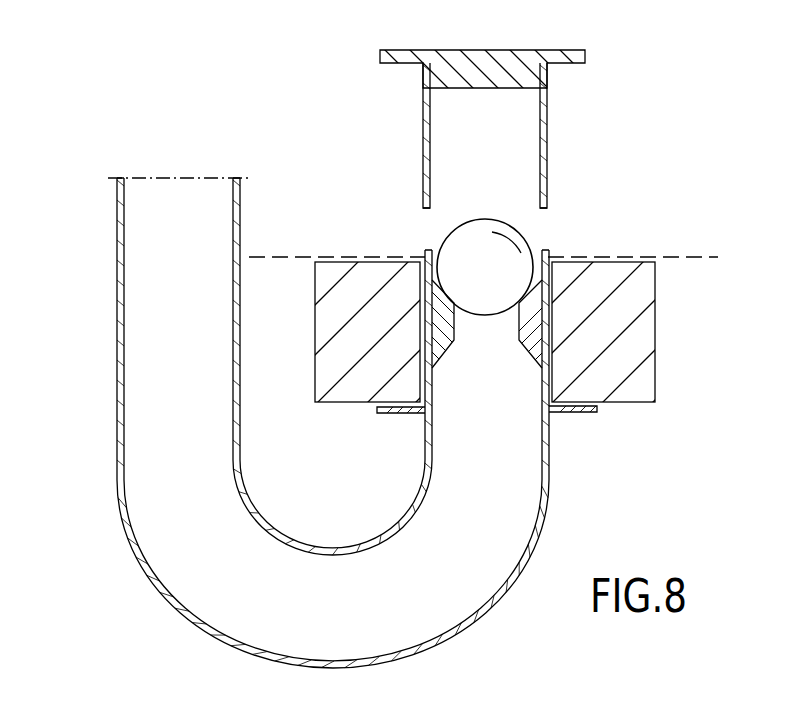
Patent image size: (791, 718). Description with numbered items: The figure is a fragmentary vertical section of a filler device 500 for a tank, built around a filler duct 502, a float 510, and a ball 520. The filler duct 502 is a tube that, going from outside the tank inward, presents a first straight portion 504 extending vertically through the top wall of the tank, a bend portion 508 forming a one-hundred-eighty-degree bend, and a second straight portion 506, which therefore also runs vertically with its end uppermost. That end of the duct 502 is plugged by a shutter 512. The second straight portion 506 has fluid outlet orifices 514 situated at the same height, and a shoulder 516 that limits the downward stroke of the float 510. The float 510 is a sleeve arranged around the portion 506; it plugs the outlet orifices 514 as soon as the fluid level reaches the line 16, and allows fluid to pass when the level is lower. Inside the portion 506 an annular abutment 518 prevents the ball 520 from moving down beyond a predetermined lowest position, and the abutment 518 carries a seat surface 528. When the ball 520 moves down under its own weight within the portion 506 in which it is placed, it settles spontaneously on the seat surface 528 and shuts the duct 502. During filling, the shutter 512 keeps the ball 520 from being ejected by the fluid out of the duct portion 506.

The line 16 is at (690, 255).
The filler device 500 is at (240, 114).
The filler duct 502 is at (104, 356).
The first straight portion 504 is at (118, 246).
The second straight portion 506 is at (549, 137).
The bend portion 508 is at (263, 653).
The float 510 is at (657, 323).
The shutter 512 is at (477, 50).
The fluid outlet orifices 514 is at (545, 229).
The shoulder 516 is at (585, 414).
The annular abutment 518 is at (535, 338).
The ball 520 is at (505, 280).
The seat surface 528 is at (452, 297).